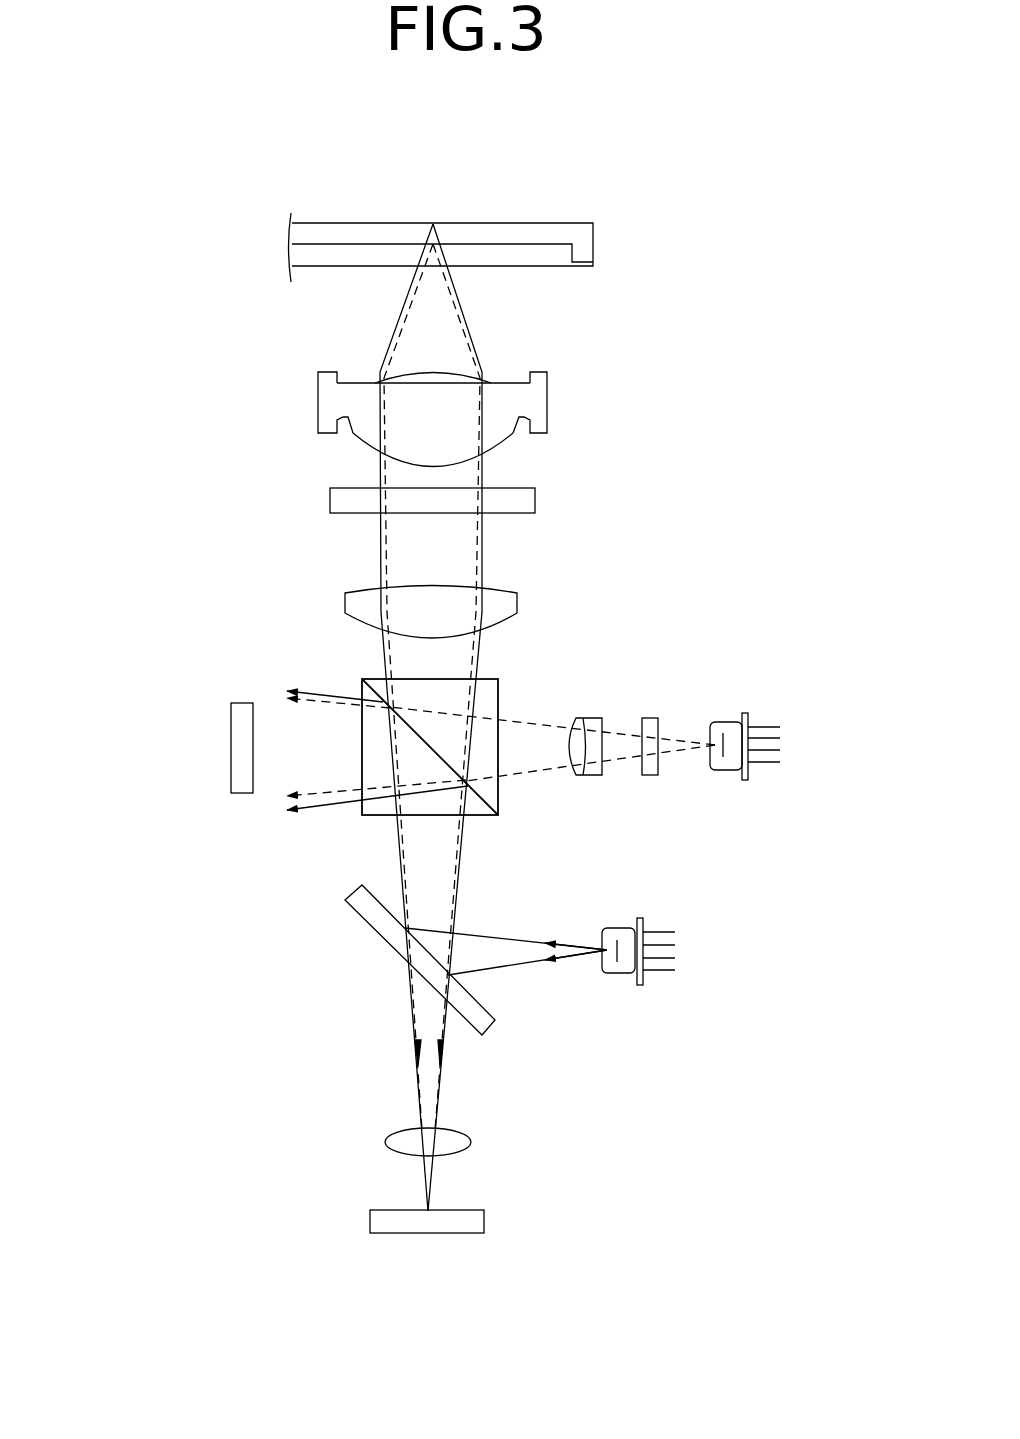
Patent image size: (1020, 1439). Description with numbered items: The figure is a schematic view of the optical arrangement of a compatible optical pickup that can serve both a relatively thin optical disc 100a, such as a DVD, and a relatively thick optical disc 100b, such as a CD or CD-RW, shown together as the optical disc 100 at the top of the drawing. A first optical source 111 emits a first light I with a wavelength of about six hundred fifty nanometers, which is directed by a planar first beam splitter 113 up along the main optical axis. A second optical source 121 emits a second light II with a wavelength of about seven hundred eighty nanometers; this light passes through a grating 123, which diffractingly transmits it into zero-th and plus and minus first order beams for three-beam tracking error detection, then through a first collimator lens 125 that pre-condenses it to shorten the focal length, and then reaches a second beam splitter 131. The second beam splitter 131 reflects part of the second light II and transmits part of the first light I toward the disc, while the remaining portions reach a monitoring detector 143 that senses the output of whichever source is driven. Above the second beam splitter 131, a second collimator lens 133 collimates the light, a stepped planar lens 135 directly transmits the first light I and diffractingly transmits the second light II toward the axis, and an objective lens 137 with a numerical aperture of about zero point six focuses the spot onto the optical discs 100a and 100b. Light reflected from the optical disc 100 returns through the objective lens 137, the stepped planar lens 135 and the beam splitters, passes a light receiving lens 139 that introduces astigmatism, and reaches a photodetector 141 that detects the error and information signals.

The optical disc 100 is at (636, 217).
The relatively thin optical disc 100a is at (316, 256).
The relatively thick optical disc 100b is at (325, 228).
The first optical source 111 is at (623, 975).
The first beam splitter 113 is at (355, 903).
The second optical source 121 is at (732, 727).
The grating 123 is at (650, 777).
The first collimator lens 125 is at (575, 777).
The second beam splitter 131 is at (492, 693).
The second collimator lens 133 is at (508, 607).
The stepped planar lens 135 is at (528, 498).
The objective lens 137 is at (540, 404).
The light receiving lens 139 is at (395, 1140).
The photodetector 141 is at (415, 1226).
The monitoring detector 143 is at (235, 750).
The first light I is at (577, 938).
The second light II is at (673, 735).